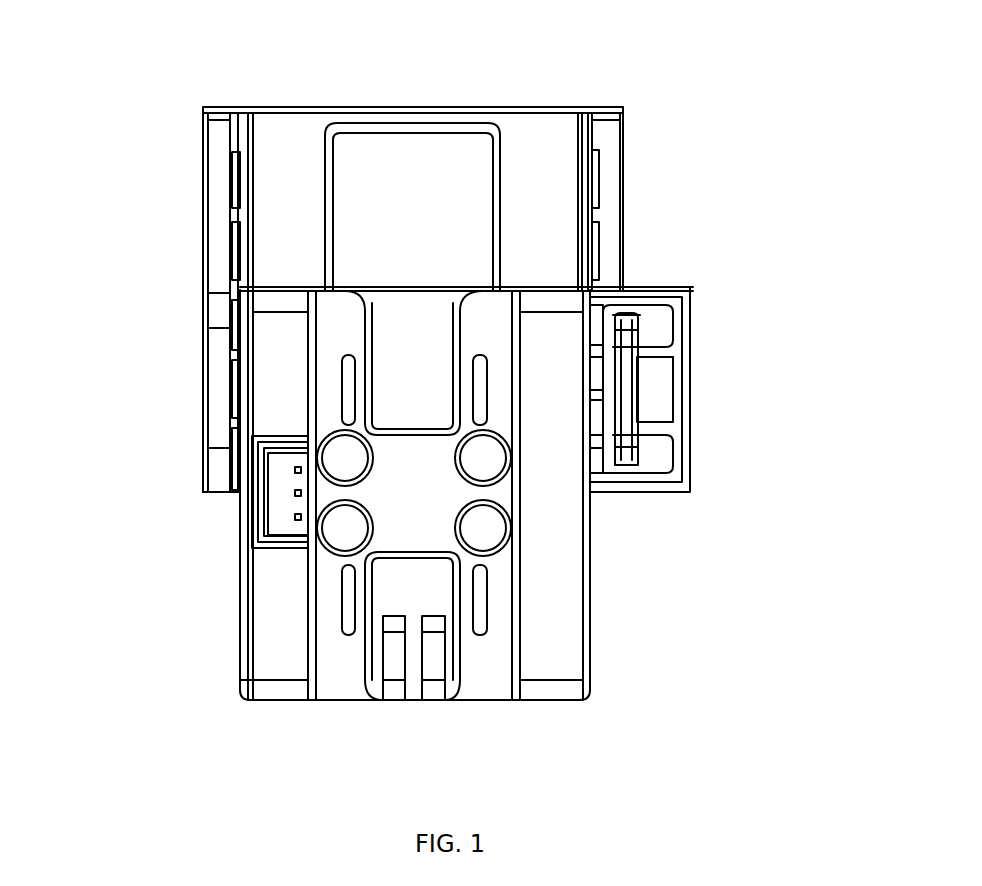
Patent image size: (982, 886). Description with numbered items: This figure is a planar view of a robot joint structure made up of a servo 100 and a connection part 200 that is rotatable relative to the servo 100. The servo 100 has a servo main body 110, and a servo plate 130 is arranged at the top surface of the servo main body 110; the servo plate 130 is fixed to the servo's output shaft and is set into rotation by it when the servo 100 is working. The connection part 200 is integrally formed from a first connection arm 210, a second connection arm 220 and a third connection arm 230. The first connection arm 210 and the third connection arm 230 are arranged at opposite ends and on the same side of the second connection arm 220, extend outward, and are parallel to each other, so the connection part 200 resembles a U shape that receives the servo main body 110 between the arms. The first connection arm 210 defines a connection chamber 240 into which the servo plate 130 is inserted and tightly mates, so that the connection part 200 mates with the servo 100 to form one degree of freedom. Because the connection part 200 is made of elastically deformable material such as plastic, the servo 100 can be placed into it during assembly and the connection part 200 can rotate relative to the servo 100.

The servo 100 is at (243, 702).
The servo main body 110 is at (557, 640).
The servo plate 130 is at (610, 390).
The connection part 200 is at (212, 110).
The first connection arm 210 is at (607, 258).
The second connection arm 220 is at (428, 183).
The third connection arm 230 is at (220, 392).
The connection chamber 240 is at (652, 330).